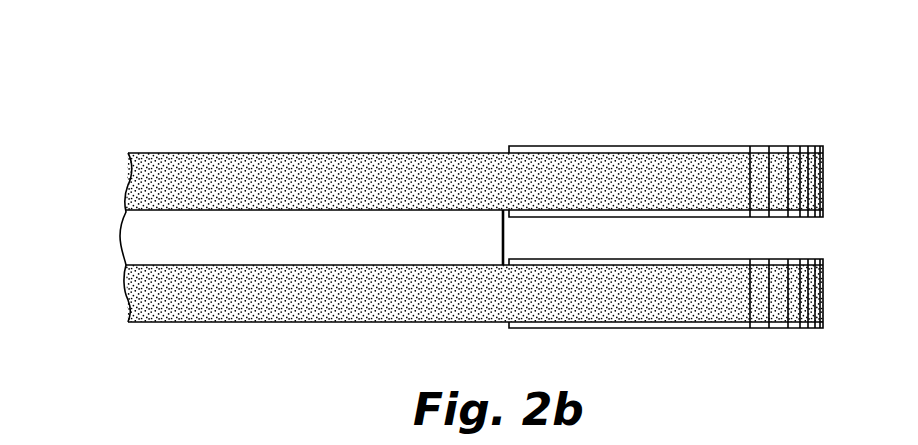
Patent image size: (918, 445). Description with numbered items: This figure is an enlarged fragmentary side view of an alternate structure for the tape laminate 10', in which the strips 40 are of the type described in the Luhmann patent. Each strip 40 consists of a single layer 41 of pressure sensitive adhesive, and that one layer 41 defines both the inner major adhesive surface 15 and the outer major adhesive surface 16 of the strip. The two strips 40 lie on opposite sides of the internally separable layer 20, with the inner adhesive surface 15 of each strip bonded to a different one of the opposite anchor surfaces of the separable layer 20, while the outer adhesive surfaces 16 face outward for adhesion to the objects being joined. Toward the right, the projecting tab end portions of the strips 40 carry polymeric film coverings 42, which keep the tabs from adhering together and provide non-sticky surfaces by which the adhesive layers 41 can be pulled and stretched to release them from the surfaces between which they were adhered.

The tape laminate 10' is at (445, 223).
The inner major adhesive surface 15 is at (150, 211).
The outer major adhesive surface 16 is at (456, 150).
The internally separable layer 20 is at (493, 244).
The strip 40 is at (614, 144).
The layer of pressure sensitive adhesive 41 is at (142, 183).
The polymeric film covering 42 is at (705, 147).